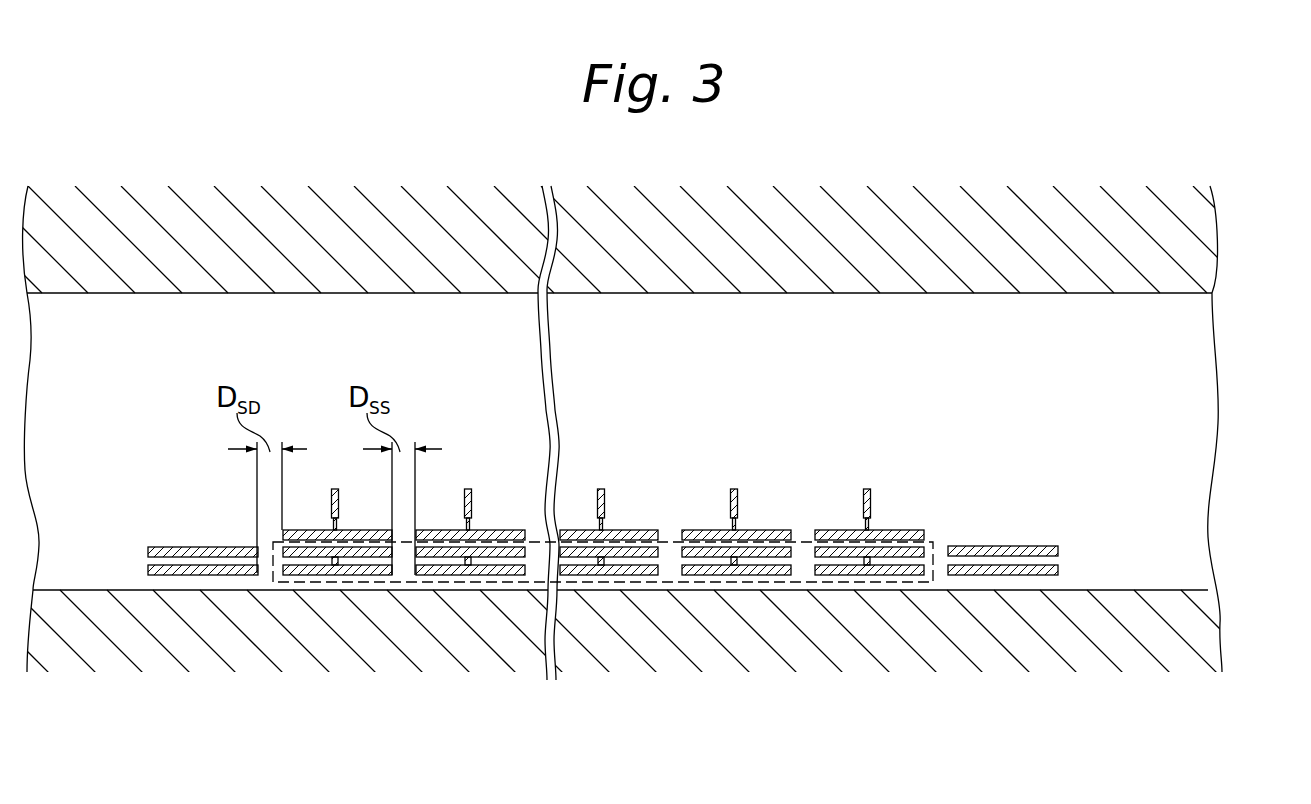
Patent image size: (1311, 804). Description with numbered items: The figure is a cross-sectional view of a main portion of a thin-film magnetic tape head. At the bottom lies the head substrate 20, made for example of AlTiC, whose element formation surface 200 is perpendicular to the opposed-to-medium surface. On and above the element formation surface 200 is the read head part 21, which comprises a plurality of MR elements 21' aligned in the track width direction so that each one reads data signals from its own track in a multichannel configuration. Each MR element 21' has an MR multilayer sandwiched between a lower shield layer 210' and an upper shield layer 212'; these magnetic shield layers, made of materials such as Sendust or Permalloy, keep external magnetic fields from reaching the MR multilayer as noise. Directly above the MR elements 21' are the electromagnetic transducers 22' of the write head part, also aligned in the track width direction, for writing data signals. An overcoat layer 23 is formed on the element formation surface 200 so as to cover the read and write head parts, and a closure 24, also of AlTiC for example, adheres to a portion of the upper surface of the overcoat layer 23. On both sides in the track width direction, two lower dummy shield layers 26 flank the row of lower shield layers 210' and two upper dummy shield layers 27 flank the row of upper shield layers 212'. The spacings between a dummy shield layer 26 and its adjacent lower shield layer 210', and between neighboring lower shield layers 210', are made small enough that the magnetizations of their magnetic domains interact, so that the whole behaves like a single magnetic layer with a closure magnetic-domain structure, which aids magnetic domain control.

The head substrate 20 is at (1202, 628).
The element formation surface 200 is at (1167, 587).
The overcoat layer 23 is at (1192, 330).
The closure 24 is at (1190, 232).
The lower dummy shield layer 26 is at (202, 575).
The upper dummy shield layer 27 is at (192, 548).
The electromagnetic transducer 22' is at (620, 477).
The read head part 21 is at (603, 654).
The MR element 21' is at (644, 669).
The lower shield layer 210' is at (603, 647).
The upper shield layer 212' is at (616, 638).